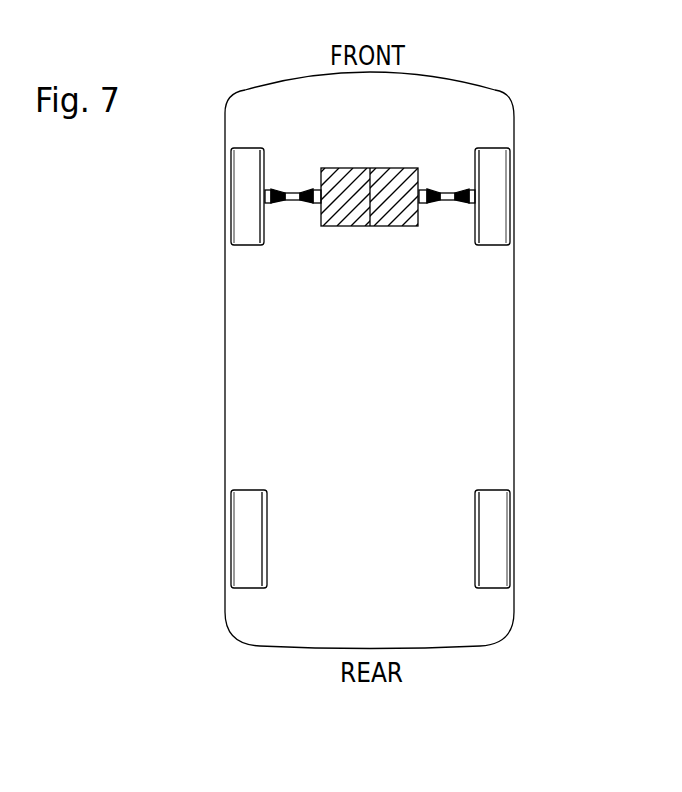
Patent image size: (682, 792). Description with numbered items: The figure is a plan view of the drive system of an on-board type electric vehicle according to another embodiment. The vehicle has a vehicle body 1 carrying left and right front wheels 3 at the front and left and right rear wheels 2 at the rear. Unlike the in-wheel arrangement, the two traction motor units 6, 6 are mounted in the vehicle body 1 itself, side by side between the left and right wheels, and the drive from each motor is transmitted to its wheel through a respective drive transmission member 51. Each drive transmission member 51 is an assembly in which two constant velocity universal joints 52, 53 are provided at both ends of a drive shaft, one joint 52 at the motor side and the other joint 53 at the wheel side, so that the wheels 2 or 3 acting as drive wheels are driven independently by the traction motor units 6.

The vehicle body 1 is at (216, 385).
The rear wheel 2 is at (231, 540).
The front wheel 3 is at (232, 197).
The traction motor unit 6 is at (342, 178).
The drive transmission member 51 is at (292, 176).
The constant velocity universal joint 52 is at (313, 207).
The constant velocity universal joint 53 is at (268, 205).